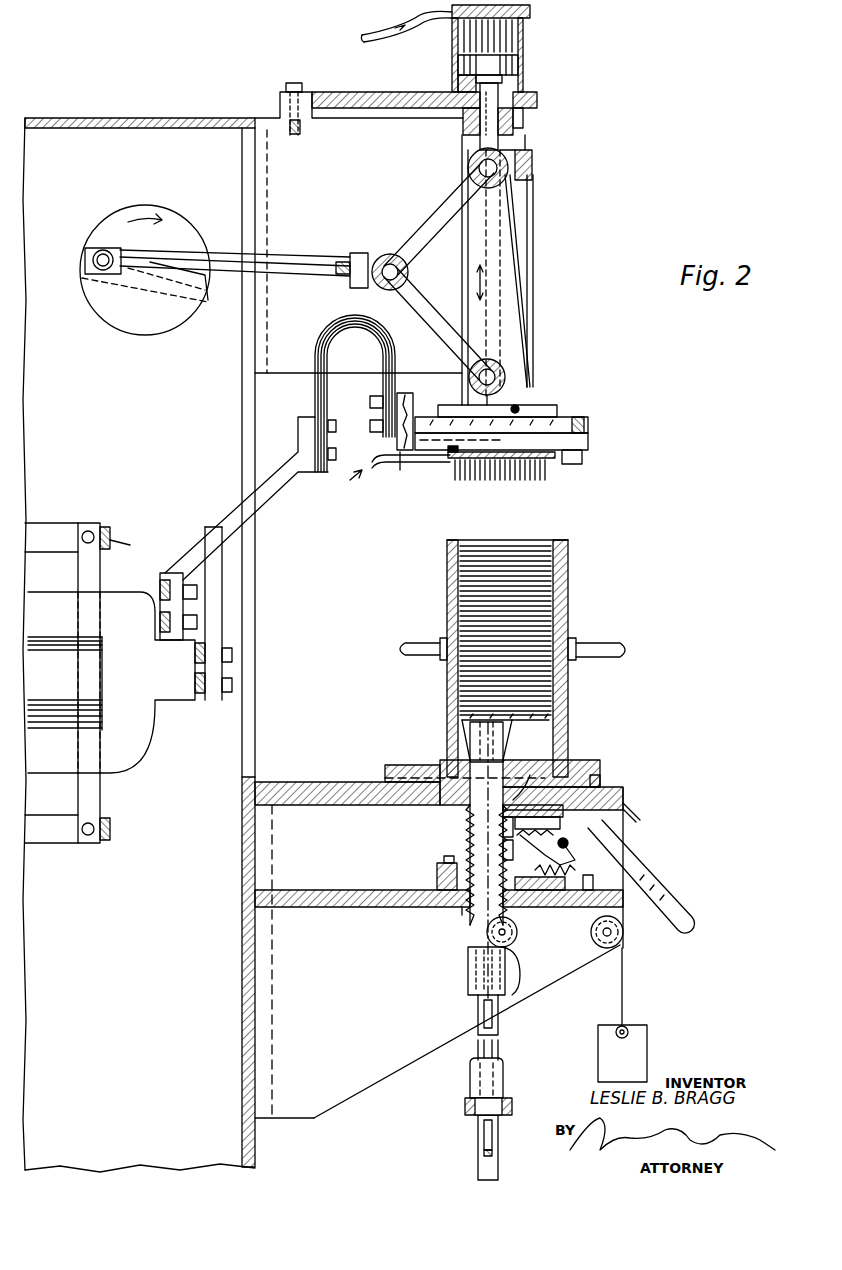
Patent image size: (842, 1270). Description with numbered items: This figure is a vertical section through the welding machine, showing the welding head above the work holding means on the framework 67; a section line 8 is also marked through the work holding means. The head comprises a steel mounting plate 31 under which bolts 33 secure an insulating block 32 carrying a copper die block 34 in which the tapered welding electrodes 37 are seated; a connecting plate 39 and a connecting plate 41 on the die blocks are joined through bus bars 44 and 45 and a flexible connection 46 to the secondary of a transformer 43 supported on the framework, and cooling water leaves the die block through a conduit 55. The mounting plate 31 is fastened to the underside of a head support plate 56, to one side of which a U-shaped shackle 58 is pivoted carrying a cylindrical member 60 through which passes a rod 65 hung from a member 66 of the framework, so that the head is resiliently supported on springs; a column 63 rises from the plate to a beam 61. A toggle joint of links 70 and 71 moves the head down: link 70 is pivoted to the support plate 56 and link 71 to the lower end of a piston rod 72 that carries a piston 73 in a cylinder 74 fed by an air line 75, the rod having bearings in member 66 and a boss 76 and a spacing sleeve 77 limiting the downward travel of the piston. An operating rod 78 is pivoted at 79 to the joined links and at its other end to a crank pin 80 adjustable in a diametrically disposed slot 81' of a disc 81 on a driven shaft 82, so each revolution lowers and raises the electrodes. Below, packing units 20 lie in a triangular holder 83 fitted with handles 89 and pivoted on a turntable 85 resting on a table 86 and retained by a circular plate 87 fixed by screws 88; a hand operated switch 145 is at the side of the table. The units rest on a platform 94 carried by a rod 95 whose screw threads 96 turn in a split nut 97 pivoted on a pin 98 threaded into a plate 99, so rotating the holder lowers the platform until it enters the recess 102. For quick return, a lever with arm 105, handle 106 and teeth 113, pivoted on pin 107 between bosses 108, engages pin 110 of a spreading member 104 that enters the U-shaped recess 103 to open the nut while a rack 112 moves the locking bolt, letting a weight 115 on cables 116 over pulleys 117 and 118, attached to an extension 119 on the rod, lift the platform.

The framework 67 is at (148, 118).
The member 66 is at (394, 100).
The cylinder 74 is at (523, 30).
The piston 73 is at (518, 62).
The spacing sleeve 77 is at (502, 82).
The piston rod 72 is at (498, 116).
The boss 76 is at (523, 124).
The rod 65 is at (532, 153).
The beam 61 is at (525, 165).
The air line 75 is at (374, 36).
The link 71 is at (438, 195).
The pivot connection 79 is at (380, 262).
The link 70 is at (432, 335).
The U-shaped shackle 58 is at (535, 395).
The operating rod 78 is at (285, 262).
The disc 81 is at (147, 253).
The crank pin 80 is at (86, 260).
The driven shaft 82 is at (155, 285).
The diametrically disposed slot 81' is at (185, 308).
The cylindrical member 60 is at (533, 278).
The column 63 is at (515, 227).
The head support plate 56 is at (552, 405).
The mounting plate 31 is at (588, 425).
The insulating block 32 is at (588, 445).
The bolts 33 is at (580, 464).
The die block 34 is at (455, 460).
The welding electrodes 37 is at (540, 478).
The connecting plate 41 is at (412, 452).
The conduit 55 is at (375, 470).
The connecting plate 39 is at (400, 455).
The flexible connections 46 is at (315, 393).
The bus bar 45 is at (268, 497).
The bus bar 44 is at (222, 597).
The transformer 43 is at (78, 720).
The holder 83 is at (568, 555).
The packing units 20 is at (545, 620).
The handle 89 is at (405, 645).
The platform 94 is at (462, 714).
The rod 95 is at (470, 738).
The section line 8 is at (498, 742).
The triangular shaped recess 102 is at (530, 775).
The table 86 is at (305, 782).
The screws 88 is at (548, 775).
The turntable 85 is at (600, 785).
The circular plate 87 is at (440, 825).
The pin 110 is at (470, 830).
The spreading member 104 is at (470, 845).
The screw threads 96 is at (466, 855).
The split nut 97 is at (437, 873).
The plate 99 is at (345, 895).
The pin 98 is at (440, 907).
The U-shaped recess 103 is at (486, 925).
The lever arm 105 is at (575, 838).
The pin 107 is at (570, 846).
The teeth 113 is at (580, 868).
The bosses 108 is at (593, 882).
The handle 106 is at (688, 915).
The hand operated switch 145 is at (633, 812).
The pulley 117 is at (623, 938).
The rack 112 is at (580, 940).
The pulley 118 is at (503, 960).
The cables 116 is at (624, 972).
The weight 115 is at (647, 1025).
The extension 119 is at (498, 1130).